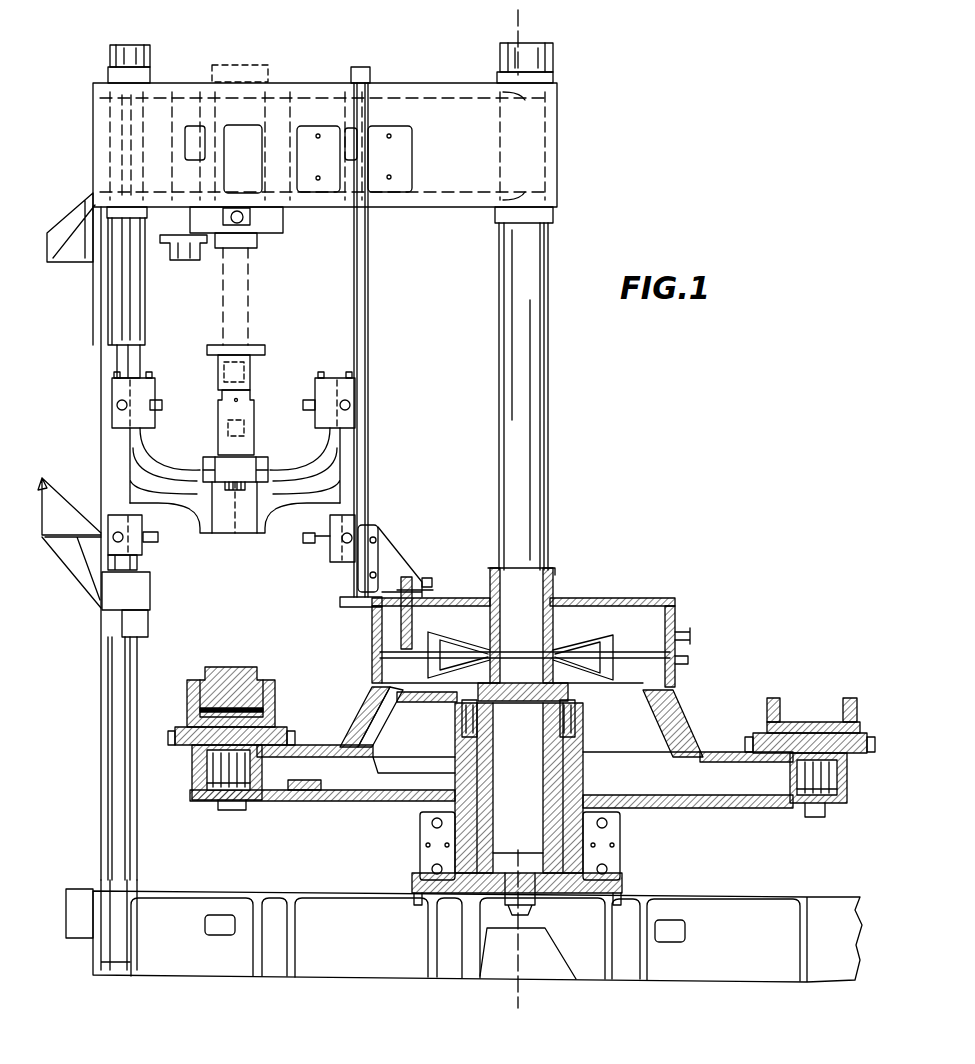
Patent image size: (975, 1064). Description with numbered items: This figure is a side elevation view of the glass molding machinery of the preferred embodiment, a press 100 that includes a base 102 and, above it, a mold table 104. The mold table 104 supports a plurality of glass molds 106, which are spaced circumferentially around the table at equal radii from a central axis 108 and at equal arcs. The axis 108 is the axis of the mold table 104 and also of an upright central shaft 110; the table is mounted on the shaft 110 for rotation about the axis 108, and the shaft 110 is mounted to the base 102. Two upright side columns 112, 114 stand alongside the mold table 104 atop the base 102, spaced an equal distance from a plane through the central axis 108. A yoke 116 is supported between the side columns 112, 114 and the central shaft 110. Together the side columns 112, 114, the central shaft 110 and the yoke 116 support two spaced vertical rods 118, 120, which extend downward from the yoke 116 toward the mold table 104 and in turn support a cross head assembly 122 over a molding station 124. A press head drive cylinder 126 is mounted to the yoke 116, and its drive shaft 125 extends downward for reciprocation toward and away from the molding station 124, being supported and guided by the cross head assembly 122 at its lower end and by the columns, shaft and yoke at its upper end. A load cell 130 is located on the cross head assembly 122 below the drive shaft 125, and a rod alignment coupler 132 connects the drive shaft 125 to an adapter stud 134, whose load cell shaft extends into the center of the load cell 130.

The press 100 is at (772, 431).
The base 102 is at (722, 895).
The mold table 104 is at (842, 790).
The glass molds 106 is at (274, 712).
The central axis 108 is at (525, 34).
The upright central shaft 110 is at (548, 401).
The side column 112 is at (133, 343).
The side column 114 is at (137, 368).
The yoke 116 is at (178, 88).
The vertical rod 118 is at (120, 363).
The vertical rod 120 is at (352, 78).
The cross head assembly 122 is at (300, 470).
The molding station 124 is at (244, 670).
The drive shaft 125 is at (250, 322).
The press head drive cylinder 126 is at (260, 245).
The load cell 130 is at (198, 463).
The rod alignment coupler 132 is at (256, 379).
The adapter stud 134 is at (247, 438).